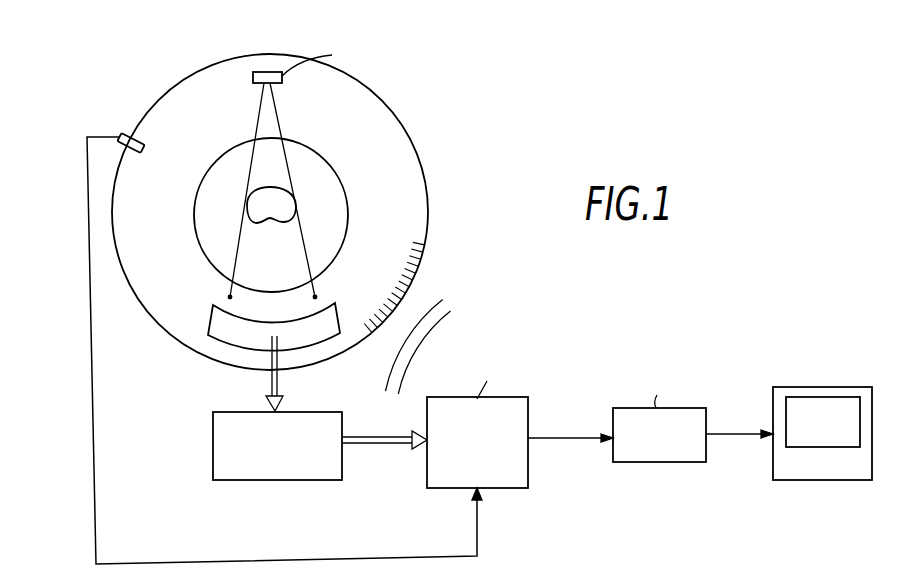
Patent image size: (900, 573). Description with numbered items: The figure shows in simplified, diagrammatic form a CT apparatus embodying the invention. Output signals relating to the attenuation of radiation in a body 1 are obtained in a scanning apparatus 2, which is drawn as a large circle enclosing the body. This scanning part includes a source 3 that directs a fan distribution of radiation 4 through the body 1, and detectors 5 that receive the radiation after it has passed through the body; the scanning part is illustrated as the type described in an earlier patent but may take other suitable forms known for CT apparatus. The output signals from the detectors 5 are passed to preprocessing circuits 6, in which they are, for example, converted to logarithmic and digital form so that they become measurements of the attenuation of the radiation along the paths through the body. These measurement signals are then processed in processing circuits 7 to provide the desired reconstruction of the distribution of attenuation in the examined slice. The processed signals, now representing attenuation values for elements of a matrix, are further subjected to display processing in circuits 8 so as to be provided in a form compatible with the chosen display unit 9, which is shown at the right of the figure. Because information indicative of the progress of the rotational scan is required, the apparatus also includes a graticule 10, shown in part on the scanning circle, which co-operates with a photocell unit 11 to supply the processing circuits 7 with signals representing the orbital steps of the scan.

The body 1 is at (288, 207).
The scanning apparatus 2 is at (397, 114).
The source 3 is at (266, 72).
The fan distribution of radiation 4 is at (303, 242).
The detectors 5 is at (338, 311).
The preprocessing circuits 6 is at (278, 481).
The processing circuits 7 is at (514, 411).
The display processing circuits 8 is at (655, 463).
The display unit 9 is at (818, 387).
The graticule 10 is at (156, 128).
The photocell unit 11 is at (125, 130).